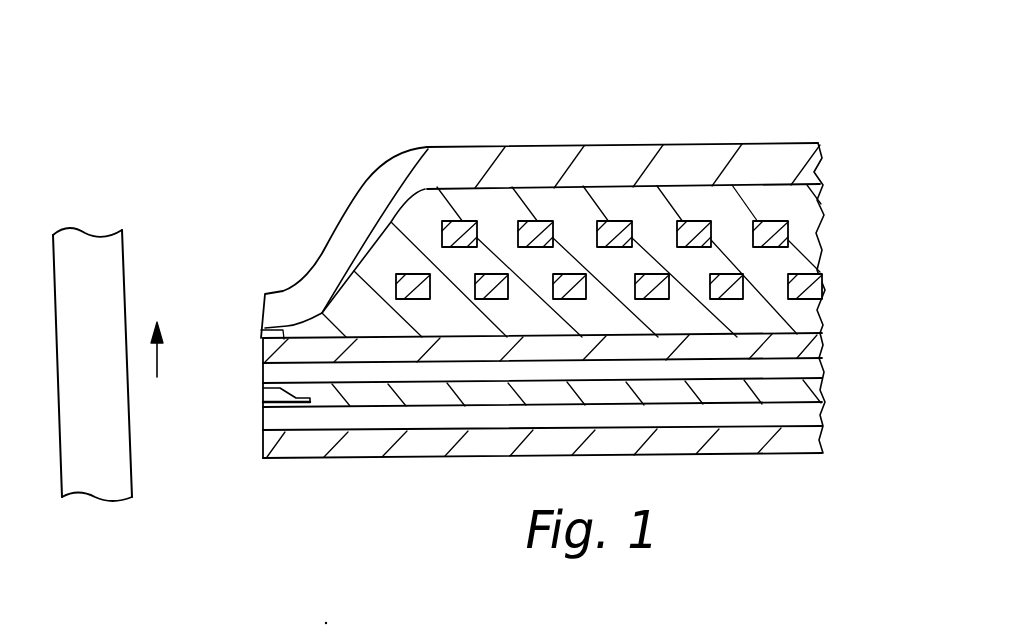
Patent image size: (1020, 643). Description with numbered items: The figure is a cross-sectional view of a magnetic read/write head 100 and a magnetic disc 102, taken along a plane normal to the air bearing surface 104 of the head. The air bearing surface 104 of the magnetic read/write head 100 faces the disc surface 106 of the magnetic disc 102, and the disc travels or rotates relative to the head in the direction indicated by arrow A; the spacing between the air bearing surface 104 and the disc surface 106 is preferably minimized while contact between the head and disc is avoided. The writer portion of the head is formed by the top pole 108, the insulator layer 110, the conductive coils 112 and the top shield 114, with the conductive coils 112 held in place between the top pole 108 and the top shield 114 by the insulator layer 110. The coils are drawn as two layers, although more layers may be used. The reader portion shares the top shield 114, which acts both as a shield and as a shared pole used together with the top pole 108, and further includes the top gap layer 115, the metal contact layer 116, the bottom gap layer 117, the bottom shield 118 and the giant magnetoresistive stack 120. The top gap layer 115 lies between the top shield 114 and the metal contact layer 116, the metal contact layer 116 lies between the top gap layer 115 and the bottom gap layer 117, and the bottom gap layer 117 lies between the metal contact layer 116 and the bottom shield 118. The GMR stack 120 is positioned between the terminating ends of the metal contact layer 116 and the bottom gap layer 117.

The magnetic read/write head 100 is at (765, 56).
The magnetic disc 102 is at (108, 417).
The air bearing surface 104 is at (260, 302).
The disc surface 106 is at (132, 478).
The top pole 108 is at (754, 157).
The insulator layer 110 is at (792, 197).
The conductive coils 112 is at (740, 268).
The top shield 114 is at (790, 345).
The top gap layer 115 is at (803, 368).
The metal contact layer 116 is at (800, 388).
The bottom gap layer 117 is at (810, 412).
The bottom shield 118 is at (808, 440).
The giant magnetoresistive (GMR) stack 120 is at (272, 402).
The arrow A is at (157, 366).